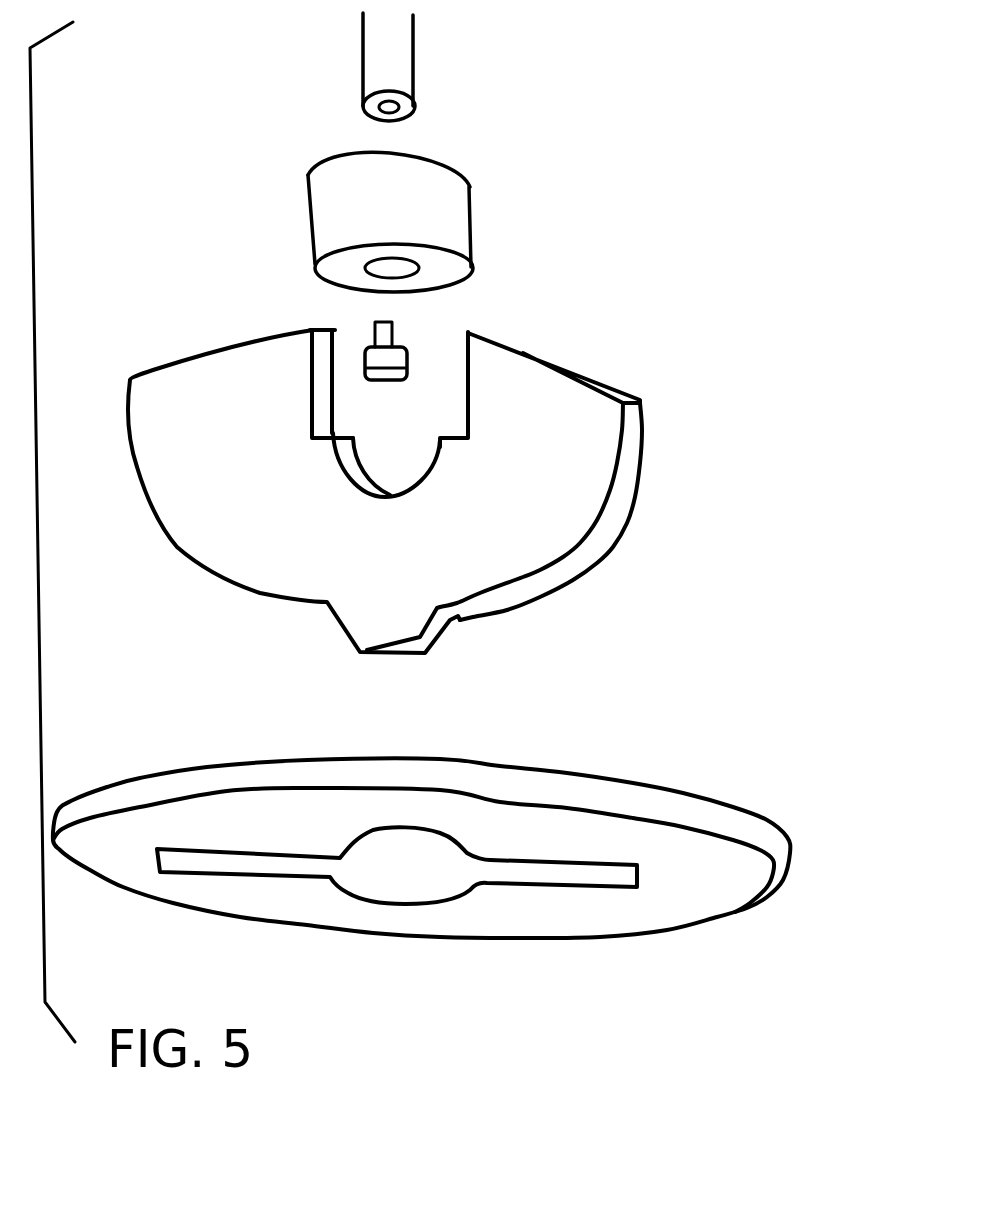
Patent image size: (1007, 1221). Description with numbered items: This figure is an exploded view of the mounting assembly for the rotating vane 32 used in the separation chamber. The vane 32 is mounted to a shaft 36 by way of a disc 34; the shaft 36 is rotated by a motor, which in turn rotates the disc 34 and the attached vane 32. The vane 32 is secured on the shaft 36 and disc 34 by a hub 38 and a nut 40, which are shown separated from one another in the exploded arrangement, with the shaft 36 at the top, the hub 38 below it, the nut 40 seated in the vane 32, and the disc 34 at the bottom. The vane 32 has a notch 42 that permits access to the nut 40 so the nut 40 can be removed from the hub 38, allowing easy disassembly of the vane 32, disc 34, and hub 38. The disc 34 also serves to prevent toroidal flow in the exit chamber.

The rotating vane 32 is at (482, 547).
The disc 34 is at (728, 890).
The shaft 36 is at (397, 70).
The hub 38 is at (440, 227).
The nut 40 is at (407, 357).
The notch 42 is at (403, 458).